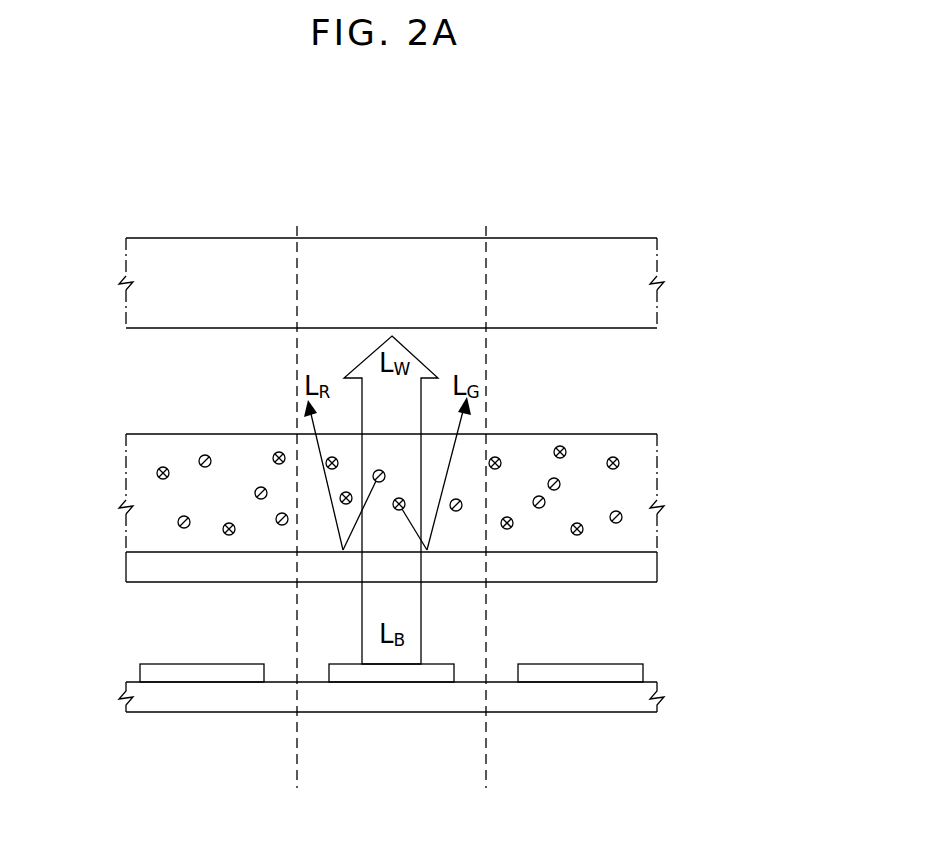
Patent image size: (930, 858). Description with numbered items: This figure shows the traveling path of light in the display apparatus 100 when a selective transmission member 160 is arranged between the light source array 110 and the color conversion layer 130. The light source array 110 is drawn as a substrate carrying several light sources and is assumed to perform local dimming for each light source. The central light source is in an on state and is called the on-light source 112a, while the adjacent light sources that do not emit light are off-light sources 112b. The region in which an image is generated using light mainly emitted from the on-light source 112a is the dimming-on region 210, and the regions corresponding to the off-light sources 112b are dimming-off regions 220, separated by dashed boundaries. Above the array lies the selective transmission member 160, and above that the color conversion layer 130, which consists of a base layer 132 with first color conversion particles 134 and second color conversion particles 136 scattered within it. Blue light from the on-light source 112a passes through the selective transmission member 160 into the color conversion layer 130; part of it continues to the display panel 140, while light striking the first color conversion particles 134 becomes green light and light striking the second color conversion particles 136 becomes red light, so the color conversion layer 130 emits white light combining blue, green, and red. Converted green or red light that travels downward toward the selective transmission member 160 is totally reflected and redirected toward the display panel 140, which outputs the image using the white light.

The display apparatus 100 is at (652, 190).
The light source array 110 is at (130, 704).
The on-light source 112a is at (444, 668).
The off-light source 112b is at (200, 668).
The color conversion layer 130 is at (343, 528).
The base layer 132 is at (130, 489).
The first color conversion particles 134 is at (399, 510).
The second color conversion particles 136 is at (379, 482).
The display panel 140 is at (130, 306).
The selective transmission member 160 is at (130, 564).
The dimming-on region 210 is at (391, 507).
The dimming-off region 220 is at (392, 747).